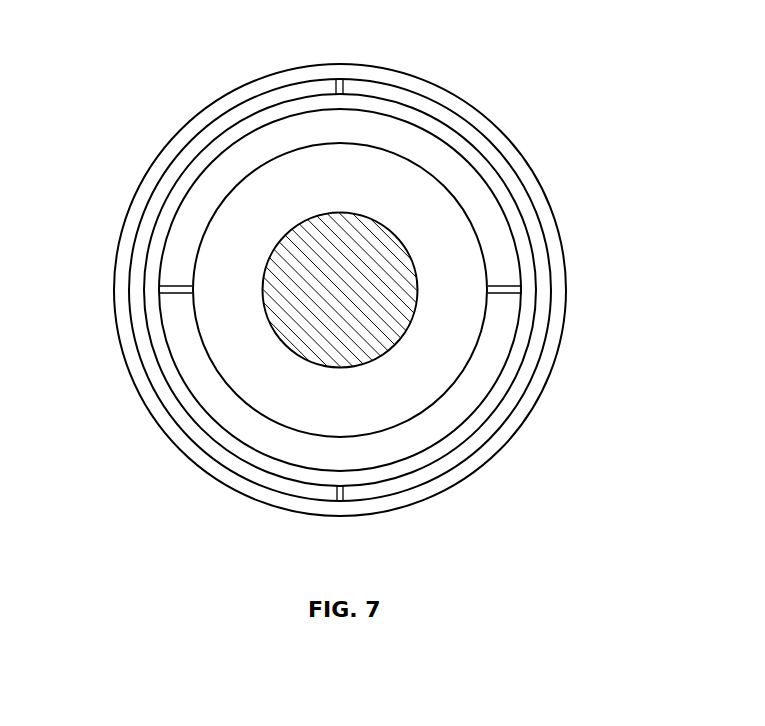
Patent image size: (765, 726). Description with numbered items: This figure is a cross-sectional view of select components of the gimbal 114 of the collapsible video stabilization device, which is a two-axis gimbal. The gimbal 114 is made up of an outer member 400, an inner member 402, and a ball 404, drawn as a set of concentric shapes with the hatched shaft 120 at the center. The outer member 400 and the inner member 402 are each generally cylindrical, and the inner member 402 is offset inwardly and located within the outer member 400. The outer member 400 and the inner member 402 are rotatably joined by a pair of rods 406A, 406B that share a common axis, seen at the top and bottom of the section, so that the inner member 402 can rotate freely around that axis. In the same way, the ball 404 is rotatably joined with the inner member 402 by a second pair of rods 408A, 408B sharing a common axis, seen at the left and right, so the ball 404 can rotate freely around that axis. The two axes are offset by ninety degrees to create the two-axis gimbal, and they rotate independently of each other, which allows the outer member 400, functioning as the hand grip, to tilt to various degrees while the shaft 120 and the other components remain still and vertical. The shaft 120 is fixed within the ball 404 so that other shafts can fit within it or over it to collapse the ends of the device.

The gimbal 114 is at (543, 114).
The shaft 120 is at (390, 267).
The outer member 400 is at (565, 290).
The inner member 402 is at (397, 477).
The ball 404 is at (407, 400).
The rod 406A is at (347, 83).
The rod 406B is at (333, 493).
The rod 408A is at (177, 297).
The rod 408B is at (502, 298).